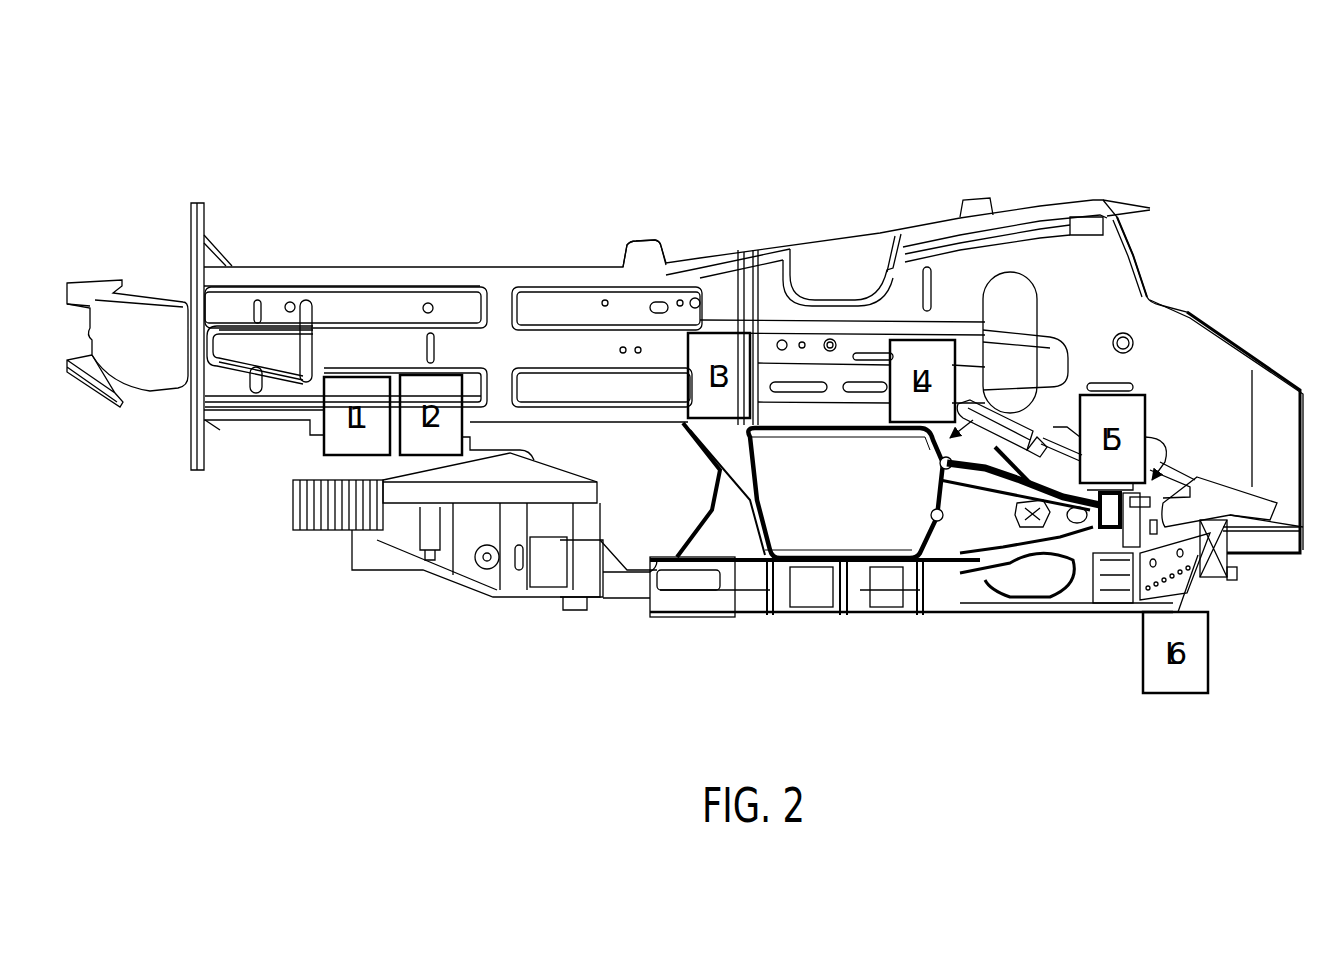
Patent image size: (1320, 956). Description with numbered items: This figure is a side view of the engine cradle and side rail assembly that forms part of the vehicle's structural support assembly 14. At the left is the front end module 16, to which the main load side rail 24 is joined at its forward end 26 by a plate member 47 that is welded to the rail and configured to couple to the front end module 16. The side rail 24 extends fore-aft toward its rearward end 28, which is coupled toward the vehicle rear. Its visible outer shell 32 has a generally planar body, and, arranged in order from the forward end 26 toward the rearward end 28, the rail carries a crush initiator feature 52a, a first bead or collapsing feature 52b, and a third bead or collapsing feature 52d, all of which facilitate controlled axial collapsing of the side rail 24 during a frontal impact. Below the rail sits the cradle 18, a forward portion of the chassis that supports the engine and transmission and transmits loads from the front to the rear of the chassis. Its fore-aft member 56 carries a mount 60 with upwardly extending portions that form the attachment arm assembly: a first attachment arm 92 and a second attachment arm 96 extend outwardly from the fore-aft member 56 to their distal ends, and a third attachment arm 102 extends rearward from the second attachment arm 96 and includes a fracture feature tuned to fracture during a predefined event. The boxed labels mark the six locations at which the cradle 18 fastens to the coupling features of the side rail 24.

The structural support assembly 14 is at (1112, 126).
The front end module 16 is at (138, 272).
The cradle 18 is at (370, 600).
The main load side rail 24 is at (833, 222).
The forward end 26 is at (226, 230).
The rearward end 28 is at (1276, 330).
The outer shell 32 is at (593, 258).
The plate member 47 is at (195, 204).
The crush initiator feature 52a is at (304, 260).
The first bead or collapsing feature 52b is at (497, 288).
The third bead or collapsing feature 52d is at (1028, 318).
The fore-aft member 56 is at (622, 588).
The mount 60 is at (806, 645).
The first attachment arm 92 is at (760, 483).
The second attachment arm 96 is at (928, 490).
The third attachment arm 102 is at (1055, 537).